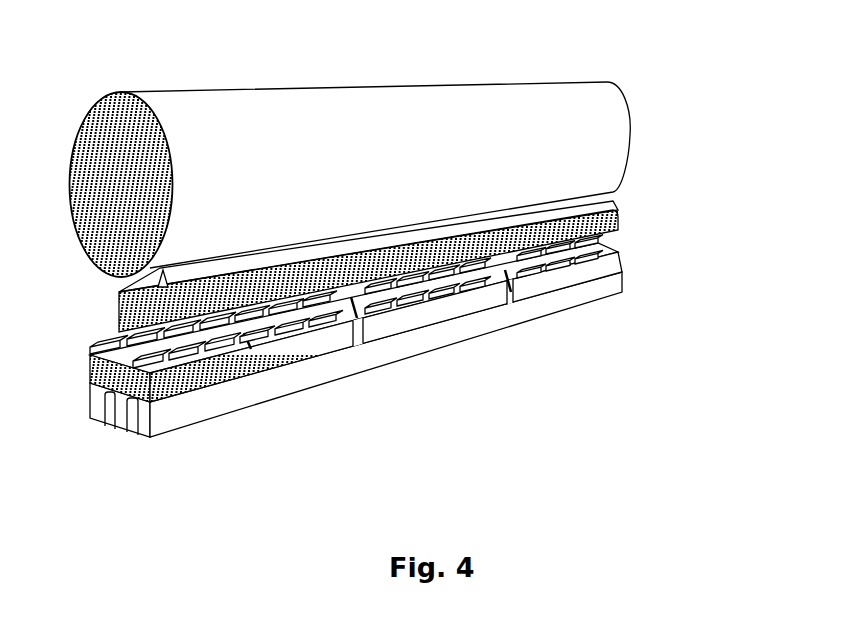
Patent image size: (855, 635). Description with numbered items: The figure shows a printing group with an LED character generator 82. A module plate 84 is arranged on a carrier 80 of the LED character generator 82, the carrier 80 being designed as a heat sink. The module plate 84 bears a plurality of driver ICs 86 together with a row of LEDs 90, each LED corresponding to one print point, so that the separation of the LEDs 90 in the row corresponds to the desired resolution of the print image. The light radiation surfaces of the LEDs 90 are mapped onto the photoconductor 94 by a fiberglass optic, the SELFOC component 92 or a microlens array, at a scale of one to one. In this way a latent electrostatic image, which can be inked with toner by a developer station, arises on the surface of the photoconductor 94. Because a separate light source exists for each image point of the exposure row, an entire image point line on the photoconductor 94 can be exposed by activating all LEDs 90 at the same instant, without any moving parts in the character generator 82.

The photoconductor 94 is at (167, 91).
The SELFOC component 92 is at (118, 303).
The LED character generator 82 is at (367, 308).
The driver ICs 86 is at (100, 347).
The module plate 84 is at (245, 358).
The LEDs 90 is at (92, 367).
The carrier 80 is at (97, 412).